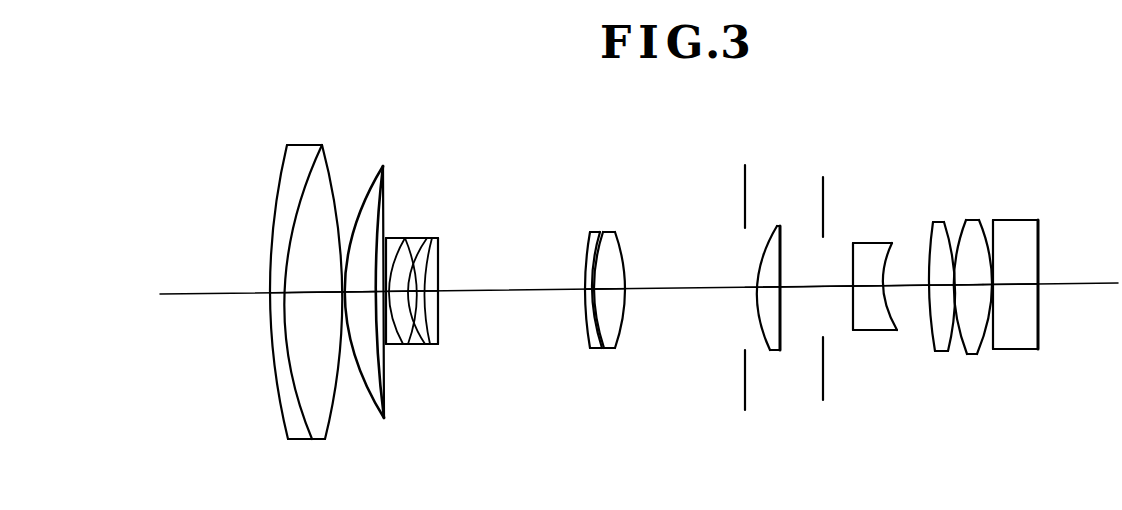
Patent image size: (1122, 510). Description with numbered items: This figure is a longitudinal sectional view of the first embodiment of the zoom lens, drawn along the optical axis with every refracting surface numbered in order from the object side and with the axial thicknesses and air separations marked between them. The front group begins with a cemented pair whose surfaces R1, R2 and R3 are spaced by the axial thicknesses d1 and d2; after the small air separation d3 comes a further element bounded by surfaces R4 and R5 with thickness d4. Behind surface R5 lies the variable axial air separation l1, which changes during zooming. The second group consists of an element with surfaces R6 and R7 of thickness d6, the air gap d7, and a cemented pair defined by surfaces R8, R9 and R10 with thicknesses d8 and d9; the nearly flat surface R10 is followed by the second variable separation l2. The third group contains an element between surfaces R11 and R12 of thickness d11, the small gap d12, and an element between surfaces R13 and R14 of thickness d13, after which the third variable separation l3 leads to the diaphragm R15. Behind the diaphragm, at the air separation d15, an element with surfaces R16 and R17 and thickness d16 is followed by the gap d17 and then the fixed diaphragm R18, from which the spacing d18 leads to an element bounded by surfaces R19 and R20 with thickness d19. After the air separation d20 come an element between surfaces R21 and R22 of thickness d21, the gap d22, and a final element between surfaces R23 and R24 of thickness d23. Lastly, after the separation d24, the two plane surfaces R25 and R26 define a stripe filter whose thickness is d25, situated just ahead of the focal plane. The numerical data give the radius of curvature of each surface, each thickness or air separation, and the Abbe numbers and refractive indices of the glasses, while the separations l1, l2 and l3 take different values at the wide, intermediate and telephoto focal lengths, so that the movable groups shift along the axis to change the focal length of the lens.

The first lens surface R1 is at (287, 440).
The second lens surface R2 is at (315, 440).
The third lens surface R3 is at (327, 440).
The fourth lens surface R4 is at (383, 419).
The fifth lens surface R5 is at (386, 419).
The sixth lens surface R6 is at (386, 345).
The seventh lens surface R7 is at (402, 345).
The eighth lens surface R8 is at (416, 345).
The ninth lens surface R9 is at (432, 346).
The tenth lens surface R10 is at (440, 346).
The eleventh lens surface R11 is at (590, 349).
The twelfth lens surface R12 is at (597, 349).
The thirteenth lens surface R13 is at (605, 349).
The fourteenth lens surface R14 is at (618, 348).
The diaphragm R15 is at (746, 411).
The sixteenth lens surface R16 is at (770, 351).
The seventeenth lens surface R17 is at (783, 351).
The fixed diaphragm R18 is at (824, 402).
The nineteenth lens surface R19 is at (857, 332).
The twentieth lens surface R20 is at (891, 332).
The twenty-first lens surface R21 is at (936, 352).
The twenty-second lens surface R22 is at (950, 352).
The twenty-third lens surface R23 is at (967, 355).
The twenty-fourth lens surface R24 is at (980, 355).
The stripe filter front surface R25 is at (997, 350).
The stripe filter rear surface R26 is at (1040, 350).
The axial thickness d1 is at (273, 293).
The axial thickness d2 is at (310, 293).
The axial air separation d3 is at (346, 258).
The axial thickness d4 is at (364, 292).
The axial thickness d6 is at (390, 291).
The axial air separation d7 is at (405, 291).
The axial thickness d8 is at (415, 291).
The axial thickness d9 is at (430, 291).
The axial thickness d11 is at (585, 288).
The axial air separation d12 is at (593, 287).
The axial thickness d13 is at (610, 287).
The axial air separation d15 is at (752, 287).
The axial thickness d16 is at (769, 287).
The axial air separation d17 is at (803, 287).
The axial air separation d18 is at (838, 287).
The axial thickness d19 is at (869, 286).
The axial air separation d20 is at (903, 286).
The axial thickness d21 is at (937, 285).
The axial air separation d22 is at (953, 285).
The axial thickness d23 is at (971, 285).
The axial air separation d24 is at (985, 284).
The axial thickness d25 is at (1013, 285).
The variable axial air separation l1 is at (384, 291).
The variable axial air separation l2 is at (530, 291).
The variable axial air separation l3 is at (696, 287).